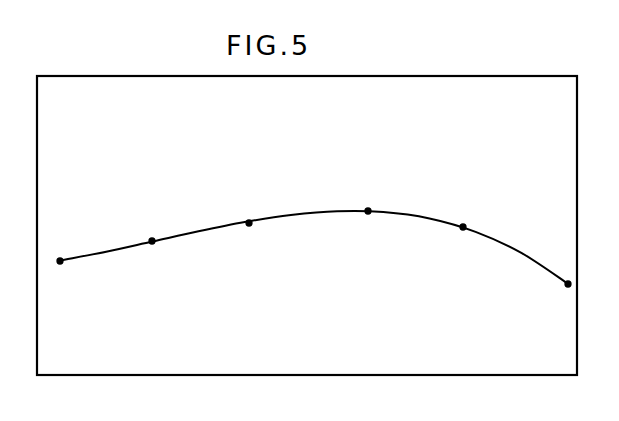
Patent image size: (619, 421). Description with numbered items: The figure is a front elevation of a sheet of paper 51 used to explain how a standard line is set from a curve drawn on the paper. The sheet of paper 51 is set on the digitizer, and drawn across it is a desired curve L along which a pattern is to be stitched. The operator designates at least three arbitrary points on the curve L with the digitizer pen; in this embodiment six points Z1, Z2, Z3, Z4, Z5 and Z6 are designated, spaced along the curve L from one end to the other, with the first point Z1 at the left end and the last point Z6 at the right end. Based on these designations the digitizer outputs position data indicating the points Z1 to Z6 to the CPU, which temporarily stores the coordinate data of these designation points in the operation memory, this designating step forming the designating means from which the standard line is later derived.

The sheet of paper 51 is at (453, 90).
The curve L is at (294, 214).
The designation point Z1 is at (62, 263).
The designation point Z2 is at (152, 240).
The designation point Z3 is at (249, 222).
The designation point Z4 is at (368, 214).
The designation point Z5 is at (463, 225).
The designation point Z6 is at (566, 285).